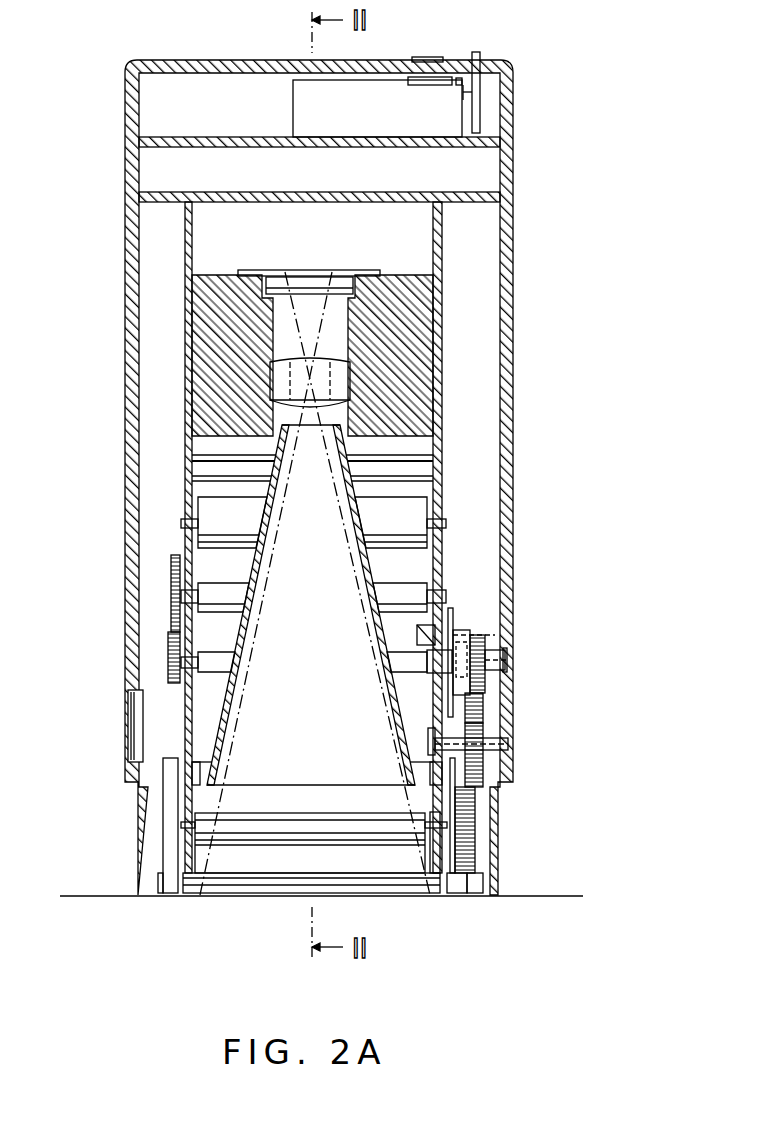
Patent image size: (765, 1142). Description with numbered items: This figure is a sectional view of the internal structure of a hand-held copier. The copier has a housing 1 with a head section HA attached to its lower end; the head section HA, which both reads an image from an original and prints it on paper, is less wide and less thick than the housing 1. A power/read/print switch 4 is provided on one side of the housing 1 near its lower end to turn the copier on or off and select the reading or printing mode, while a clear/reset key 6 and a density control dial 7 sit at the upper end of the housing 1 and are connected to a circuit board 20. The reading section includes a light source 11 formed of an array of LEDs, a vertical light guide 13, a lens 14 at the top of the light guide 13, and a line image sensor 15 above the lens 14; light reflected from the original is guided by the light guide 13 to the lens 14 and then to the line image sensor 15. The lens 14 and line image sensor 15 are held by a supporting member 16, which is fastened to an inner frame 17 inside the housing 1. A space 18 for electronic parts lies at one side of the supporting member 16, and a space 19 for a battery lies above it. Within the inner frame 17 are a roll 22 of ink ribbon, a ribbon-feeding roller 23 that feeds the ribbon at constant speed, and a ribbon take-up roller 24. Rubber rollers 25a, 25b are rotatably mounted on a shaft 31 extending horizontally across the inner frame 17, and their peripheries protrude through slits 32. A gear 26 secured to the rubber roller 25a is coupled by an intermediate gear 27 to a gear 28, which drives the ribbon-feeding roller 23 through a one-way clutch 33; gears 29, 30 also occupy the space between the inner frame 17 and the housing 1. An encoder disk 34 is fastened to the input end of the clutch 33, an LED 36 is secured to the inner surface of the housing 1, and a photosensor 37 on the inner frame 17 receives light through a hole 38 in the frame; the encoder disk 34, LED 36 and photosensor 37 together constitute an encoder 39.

The housing 1 is at (515, 312).
The power/read/print switch 4 is at (129, 735).
The clear/reset key 6 is at (431, 58).
The density control dial 7 is at (480, 52).
The light source 11 is at (275, 838).
The vertical light guide 13 is at (268, 518).
The lens 14 is at (280, 372).
The line image sensor 15 is at (311, 286).
The supporting member 16 is at (193, 312).
The inner frame 17 is at (186, 266).
The space accommodating electronic parts 18 is at (142, 233).
The space accommodating a battery 19 is at (496, 163).
The circuit board 20 is at (292, 92).
The roll of ink ribbon 22 is at (383, 533).
The ribbon-feeding roller 23 is at (235, 670).
The ribbon take-up roller 24 is at (222, 604).
The rubber roller 25a is at (452, 897).
The rubber roller 25b is at (169, 897).
The gear 26 is at (478, 828).
The intermediate gear 27 is at (484, 776).
The gear 28 is at (486, 679).
The gear 29 is at (168, 663).
The gear 30 is at (171, 572).
The shaft 31 is at (432, 820).
The slits 32 is at (160, 897).
The clutch 33 is at (480, 702).
The encoder disk 34 is at (438, 636).
The LED 36 is at (493, 636).
The photosensor 37 is at (452, 626).
The hole 38 is at (412, 635).
The encoder 39 is at (565, 538).
The head section HA is at (139, 830).